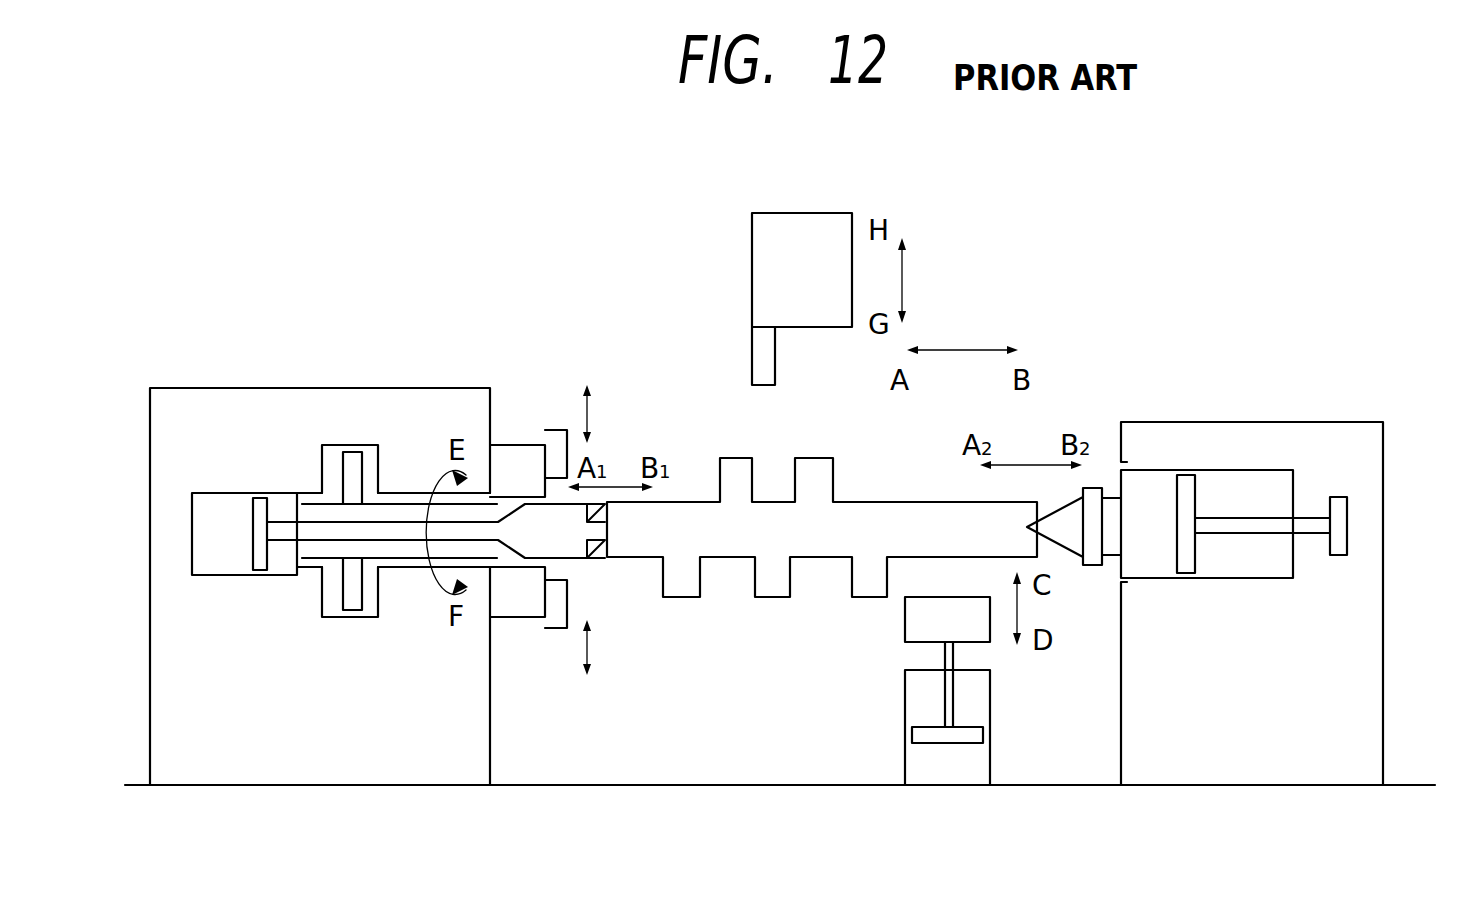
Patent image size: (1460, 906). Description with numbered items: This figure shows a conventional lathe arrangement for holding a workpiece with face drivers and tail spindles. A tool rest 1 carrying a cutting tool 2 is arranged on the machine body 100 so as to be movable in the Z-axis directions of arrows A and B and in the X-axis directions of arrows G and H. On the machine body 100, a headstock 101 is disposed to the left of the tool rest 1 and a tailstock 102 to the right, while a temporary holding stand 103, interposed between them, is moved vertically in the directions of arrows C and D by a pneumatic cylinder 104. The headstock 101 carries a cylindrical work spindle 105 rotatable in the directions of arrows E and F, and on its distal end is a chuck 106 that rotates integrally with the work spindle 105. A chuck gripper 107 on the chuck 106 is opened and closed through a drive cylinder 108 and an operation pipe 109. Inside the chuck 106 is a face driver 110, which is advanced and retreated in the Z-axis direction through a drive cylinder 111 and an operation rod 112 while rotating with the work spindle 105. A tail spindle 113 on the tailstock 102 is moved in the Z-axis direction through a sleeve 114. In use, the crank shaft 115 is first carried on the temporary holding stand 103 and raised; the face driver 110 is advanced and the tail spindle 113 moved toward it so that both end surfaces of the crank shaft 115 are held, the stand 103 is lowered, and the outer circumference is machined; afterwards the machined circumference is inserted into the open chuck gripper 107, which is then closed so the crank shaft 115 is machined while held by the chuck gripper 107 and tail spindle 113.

The tool rest 1 is at (752, 270).
The cutting tool 2 is at (752, 354).
The machine body 100 is at (1415, 783).
The headstock 101 is at (225, 388).
The tailstock 102 is at (1338, 422).
The temporary holding stand 103 is at (905, 628).
The pneumatic cylinder 104 is at (983, 705).
The work spindle 105 is at (395, 493).
The chuck 106 is at (515, 445).
The chuck gripper 107 is at (553, 430).
The drive cylinder 108 is at (338, 617).
The operation pipe 109 is at (398, 560).
The face driver 110 is at (590, 558).
The drive cylinder 111 is at (215, 575).
The operation rod 112 is at (312, 533).
The tail spindle 113 is at (1093, 488).
The sleeve 114 is at (1255, 578).
The crank shaft 115 is at (870, 500).